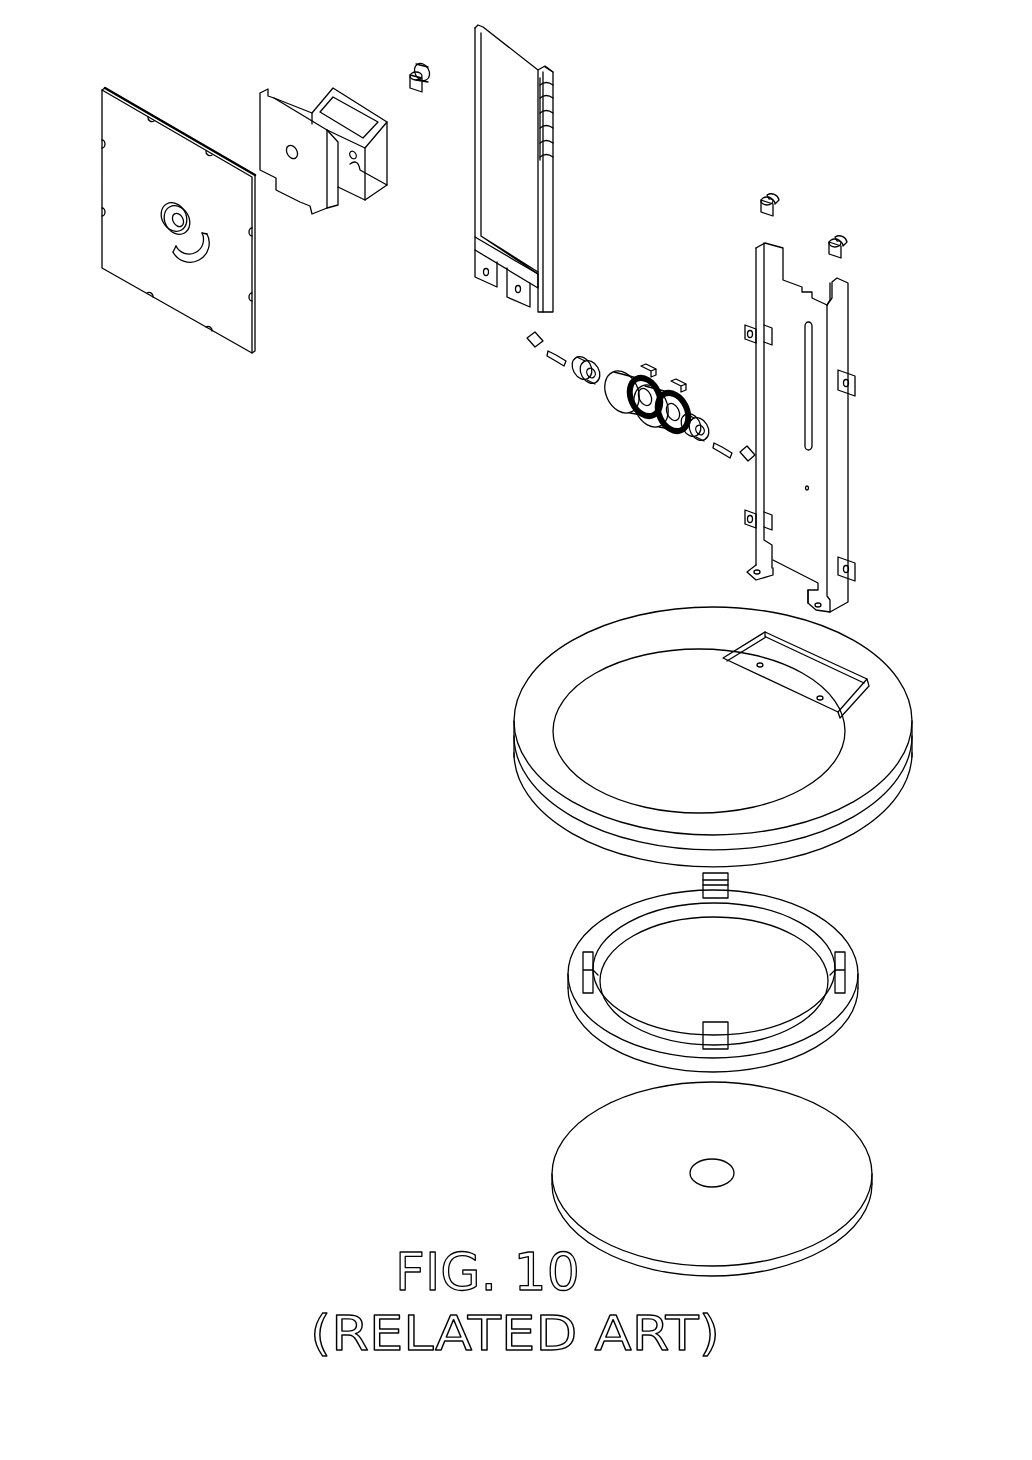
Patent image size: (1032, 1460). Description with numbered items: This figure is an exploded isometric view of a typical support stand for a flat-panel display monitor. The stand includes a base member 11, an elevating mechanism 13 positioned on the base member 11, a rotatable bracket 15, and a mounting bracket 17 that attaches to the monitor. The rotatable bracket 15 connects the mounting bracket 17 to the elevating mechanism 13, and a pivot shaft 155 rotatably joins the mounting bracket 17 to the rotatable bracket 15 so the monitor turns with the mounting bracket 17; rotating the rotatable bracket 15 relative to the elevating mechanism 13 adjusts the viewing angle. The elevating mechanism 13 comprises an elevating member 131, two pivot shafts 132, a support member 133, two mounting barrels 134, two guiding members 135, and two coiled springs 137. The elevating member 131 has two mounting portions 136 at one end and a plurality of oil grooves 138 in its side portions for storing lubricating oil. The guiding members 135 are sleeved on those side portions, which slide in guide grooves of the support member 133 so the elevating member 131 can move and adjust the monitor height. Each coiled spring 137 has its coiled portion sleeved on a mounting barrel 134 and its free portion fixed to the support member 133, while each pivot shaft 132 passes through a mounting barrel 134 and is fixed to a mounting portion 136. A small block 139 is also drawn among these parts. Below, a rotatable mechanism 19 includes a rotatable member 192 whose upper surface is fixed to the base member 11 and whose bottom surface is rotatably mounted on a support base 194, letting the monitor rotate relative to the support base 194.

The base member 11 is at (548, 763).
The elevating mechanism 13 is at (500, 444).
The rotatable bracket 15 is at (302, 190).
The mounting bracket 17 is at (130, 257).
The rotatable mechanism 19 is at (642, 1074).
The elevating member 131 is at (528, 168).
The pivot shafts 132 is at (720, 453).
The support member 133 is at (837, 493).
The mounting barrels 134 is at (688, 437).
The guiding members 135 is at (776, 193).
The mounting portions 136 is at (486, 275).
The coiled springs 137 is at (630, 415).
The oil grooves 138 is at (555, 112).
The block 139 is at (745, 462).
The pivot shaft 155 is at (410, 68).
The rotatable member 192 is at (600, 1033).
The support base 194 is at (570, 1162).